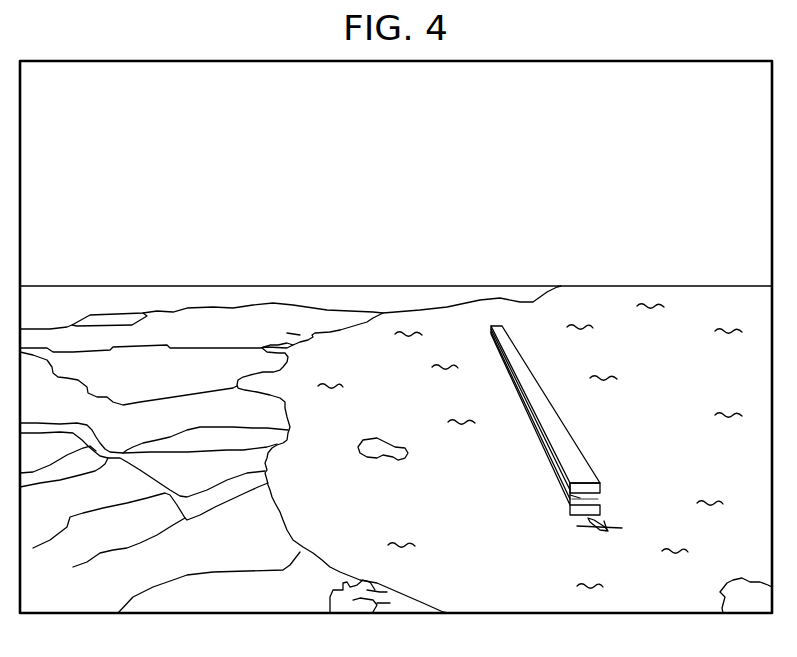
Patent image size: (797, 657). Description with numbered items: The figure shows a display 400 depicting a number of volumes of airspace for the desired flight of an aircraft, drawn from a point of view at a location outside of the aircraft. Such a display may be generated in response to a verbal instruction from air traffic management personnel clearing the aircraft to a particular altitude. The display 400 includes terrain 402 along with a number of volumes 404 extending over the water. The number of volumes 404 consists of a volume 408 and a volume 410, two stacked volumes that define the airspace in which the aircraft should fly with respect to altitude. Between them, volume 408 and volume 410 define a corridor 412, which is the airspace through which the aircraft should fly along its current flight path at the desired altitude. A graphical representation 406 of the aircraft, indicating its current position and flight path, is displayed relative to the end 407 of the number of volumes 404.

The display 400 is at (598, 54).
The terrain 402 is at (242, 551).
The number of volumes 404 is at (518, 546).
The graphical representation 406 is at (601, 529).
The end 407 is at (602, 488).
The volume 408 is at (570, 443).
The volume 410 is at (580, 499).
The corridor 412 is at (606, 501).